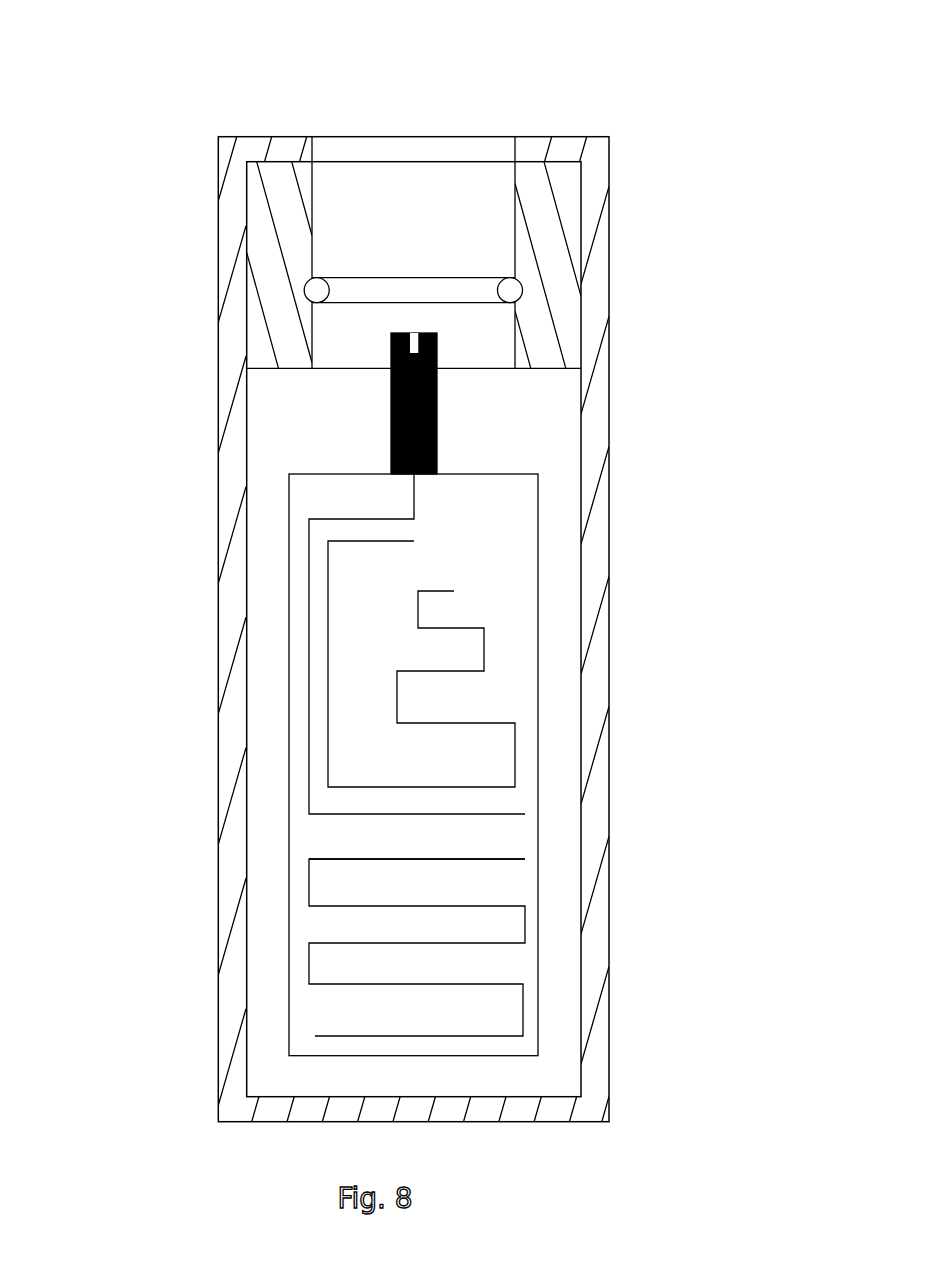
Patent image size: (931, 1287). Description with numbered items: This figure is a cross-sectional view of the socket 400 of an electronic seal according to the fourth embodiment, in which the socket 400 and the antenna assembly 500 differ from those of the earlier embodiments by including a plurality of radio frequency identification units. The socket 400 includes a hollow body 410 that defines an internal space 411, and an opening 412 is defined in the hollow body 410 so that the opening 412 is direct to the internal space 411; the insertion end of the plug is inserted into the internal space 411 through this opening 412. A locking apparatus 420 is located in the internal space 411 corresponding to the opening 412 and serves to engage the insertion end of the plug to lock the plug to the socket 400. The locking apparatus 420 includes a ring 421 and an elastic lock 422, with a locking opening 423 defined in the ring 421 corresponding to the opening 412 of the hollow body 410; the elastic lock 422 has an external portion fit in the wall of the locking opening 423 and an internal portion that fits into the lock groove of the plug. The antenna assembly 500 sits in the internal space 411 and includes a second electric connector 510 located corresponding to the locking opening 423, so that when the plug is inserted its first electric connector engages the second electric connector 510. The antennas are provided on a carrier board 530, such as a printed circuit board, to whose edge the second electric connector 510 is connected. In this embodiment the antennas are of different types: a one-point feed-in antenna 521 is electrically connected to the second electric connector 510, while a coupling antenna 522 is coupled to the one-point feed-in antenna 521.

The socket 400 is at (225, 595).
The hollow body 410 is at (620, 677).
The internal space 411 is at (486, 427).
The opening 412 is at (515, 146).
The locking apparatus 420 is at (485, 191).
The ring 421 is at (567, 210).
The elastic lock 422 is at (385, 292).
The locking opening 423 is at (312, 180).
The antenna assembly 500 is at (478, 694).
The second electric connector 510 is at (437, 447).
The one-point feed-in antenna 521 is at (525, 926).
The coupling antenna 522 is at (484, 650).
The carrier board 530 is at (538, 840).